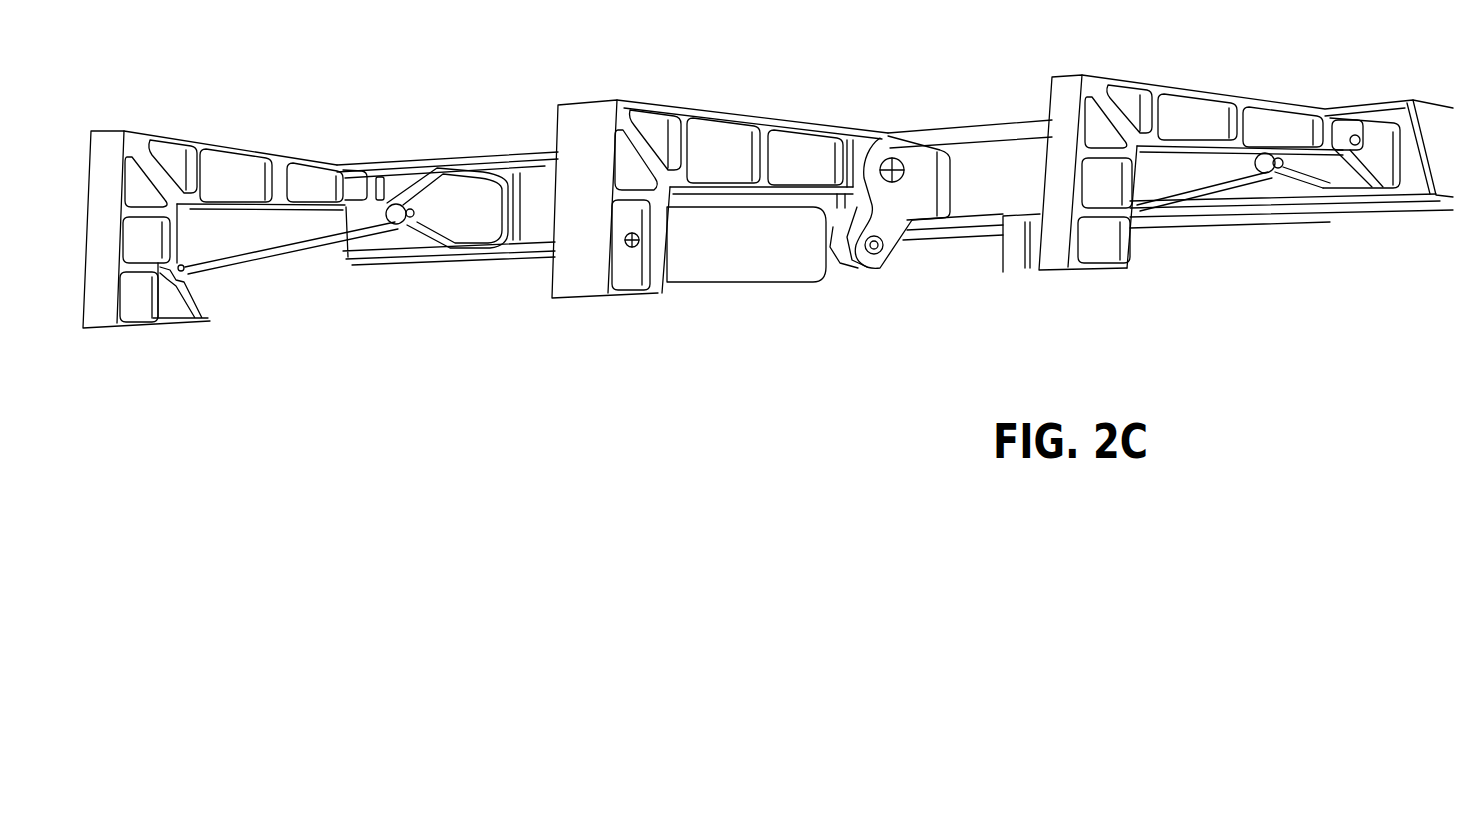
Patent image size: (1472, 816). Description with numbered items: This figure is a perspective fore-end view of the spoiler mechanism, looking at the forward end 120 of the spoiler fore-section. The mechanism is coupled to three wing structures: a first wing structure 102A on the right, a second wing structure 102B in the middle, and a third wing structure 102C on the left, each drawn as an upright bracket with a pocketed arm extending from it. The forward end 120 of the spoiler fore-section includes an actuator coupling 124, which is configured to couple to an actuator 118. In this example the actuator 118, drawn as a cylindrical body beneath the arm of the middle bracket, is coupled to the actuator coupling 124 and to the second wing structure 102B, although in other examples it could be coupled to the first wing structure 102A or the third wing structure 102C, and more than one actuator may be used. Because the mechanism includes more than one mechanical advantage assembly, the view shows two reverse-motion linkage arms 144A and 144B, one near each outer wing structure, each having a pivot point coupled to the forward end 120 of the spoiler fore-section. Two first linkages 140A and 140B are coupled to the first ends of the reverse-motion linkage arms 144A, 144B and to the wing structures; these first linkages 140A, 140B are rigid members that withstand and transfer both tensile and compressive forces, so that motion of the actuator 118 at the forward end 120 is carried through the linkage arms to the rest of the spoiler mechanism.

The first wing structure 102A is at (1056, 79).
The second wing structure 102B is at (571, 109).
The third wing structure 102C is at (214, 142).
The actuator 118 is at (694, 283).
The forward end 120 is at (517, 165).
The actuator coupling 124 is at (878, 252).
The first linkage 140A is at (1172, 197).
The first linkage 140B is at (247, 262).
The reverse-motion linkage arm 144A is at (1263, 152).
The reverse-motion linkage arm 144B is at (396, 208).